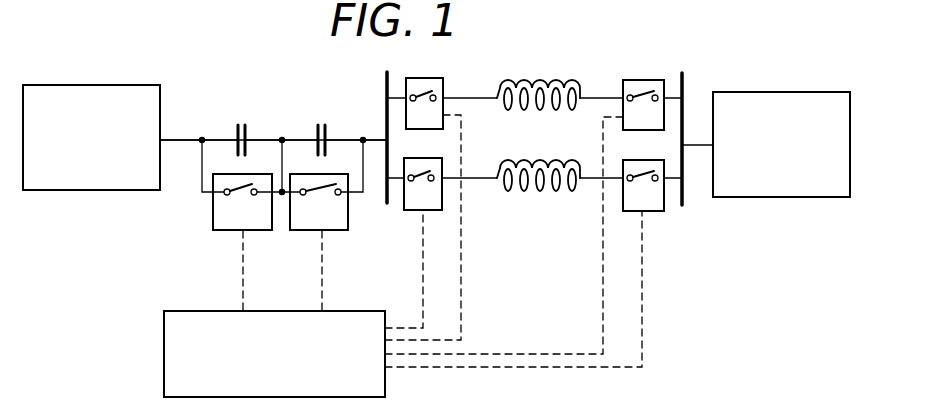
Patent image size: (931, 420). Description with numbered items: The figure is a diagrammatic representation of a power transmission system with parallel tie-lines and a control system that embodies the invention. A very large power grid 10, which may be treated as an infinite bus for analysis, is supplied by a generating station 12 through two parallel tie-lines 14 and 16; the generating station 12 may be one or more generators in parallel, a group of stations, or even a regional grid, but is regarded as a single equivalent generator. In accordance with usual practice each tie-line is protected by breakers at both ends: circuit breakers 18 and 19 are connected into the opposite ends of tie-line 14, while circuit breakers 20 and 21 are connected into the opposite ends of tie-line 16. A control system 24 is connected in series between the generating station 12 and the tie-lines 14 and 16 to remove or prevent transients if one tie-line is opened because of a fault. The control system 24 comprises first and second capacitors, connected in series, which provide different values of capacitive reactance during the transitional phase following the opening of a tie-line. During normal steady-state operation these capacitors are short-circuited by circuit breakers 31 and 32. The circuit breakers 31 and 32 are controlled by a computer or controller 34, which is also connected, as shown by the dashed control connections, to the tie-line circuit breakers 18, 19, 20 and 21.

The power grid 10 is at (778, 92).
The generating station 12 is at (105, 85).
The tie-line 14 is at (545, 84).
The tie-line 16 is at (557, 192).
The circuit breaker 18 is at (428, 80).
The circuit breaker 19 is at (642, 80).
The circuit breaker 20 is at (430, 212).
The circuit breaker 21 is at (652, 212).
The control system 24 is at (275, 152).
The circuit breaker 31 is at (213, 213).
The circuit breaker 32 is at (348, 222).
The computer or controller 34 is at (205, 310).